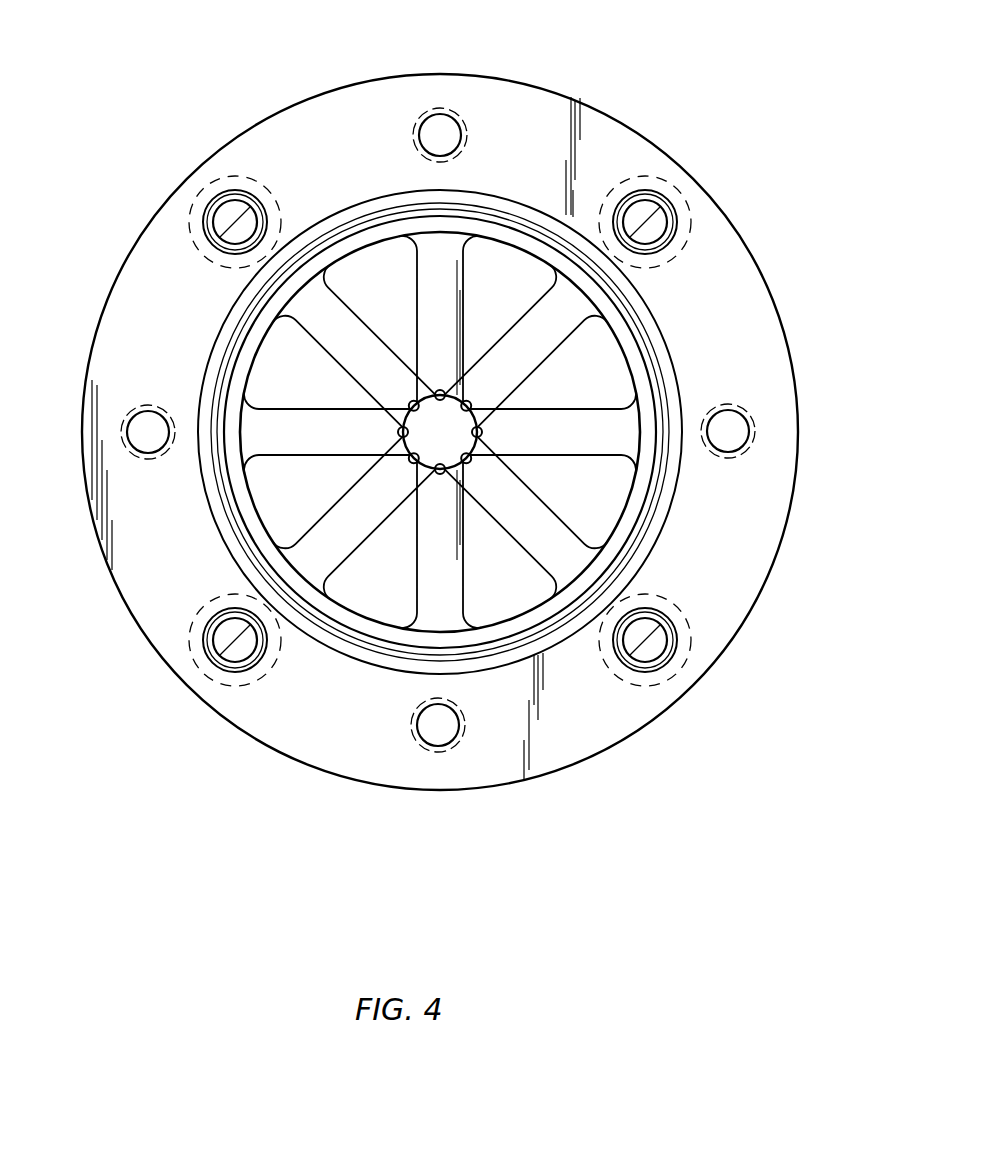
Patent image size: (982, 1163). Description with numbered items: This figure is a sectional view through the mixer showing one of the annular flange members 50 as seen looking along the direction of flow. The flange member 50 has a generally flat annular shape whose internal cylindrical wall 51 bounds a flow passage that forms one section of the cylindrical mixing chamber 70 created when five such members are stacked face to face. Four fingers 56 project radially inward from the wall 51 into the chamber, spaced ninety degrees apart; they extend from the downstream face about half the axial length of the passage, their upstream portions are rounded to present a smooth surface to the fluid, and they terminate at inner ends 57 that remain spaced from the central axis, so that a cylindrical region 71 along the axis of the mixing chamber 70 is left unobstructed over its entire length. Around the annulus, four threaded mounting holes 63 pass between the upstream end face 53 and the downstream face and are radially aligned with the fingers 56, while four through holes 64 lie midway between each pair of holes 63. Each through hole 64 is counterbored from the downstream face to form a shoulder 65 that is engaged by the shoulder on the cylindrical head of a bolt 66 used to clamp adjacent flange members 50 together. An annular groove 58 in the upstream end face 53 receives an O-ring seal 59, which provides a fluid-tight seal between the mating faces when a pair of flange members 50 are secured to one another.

The flange member 50 is at (495, 70).
The internal cylindrical wall 51 is at (612, 345).
The upstream end face 53 is at (590, 108).
The fingers 56 is at (418, 282).
The inner ends 57 is at (482, 490).
The annular groove 58 is at (650, 531).
The O-ring seal 59 is at (660, 505).
The threaded mounting holes 63 is at (460, 135).
The through holes 64 is at (238, 190).
The shoulder 65 is at (190, 210).
The bolt 66 is at (225, 212).
The mixing chamber 70 is at (522, 290).
The cylindrical region 71 is at (460, 450).